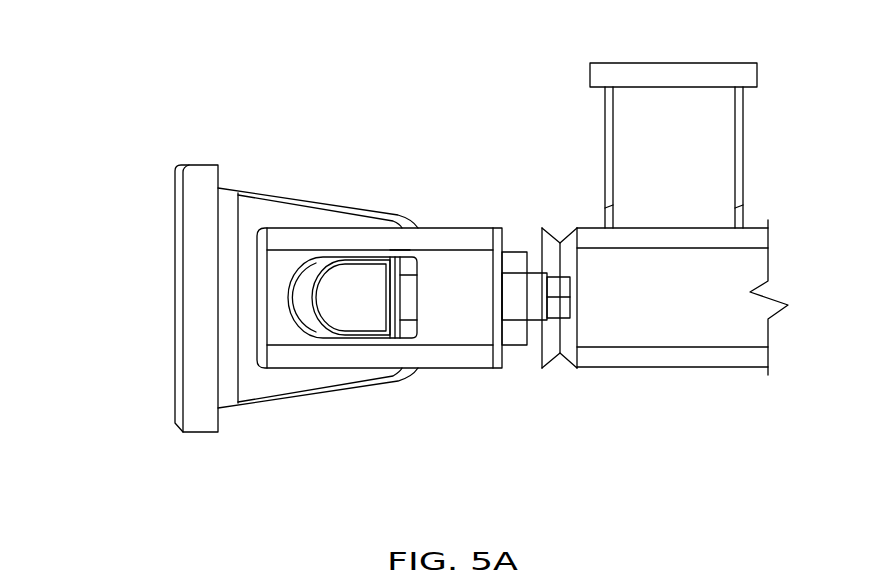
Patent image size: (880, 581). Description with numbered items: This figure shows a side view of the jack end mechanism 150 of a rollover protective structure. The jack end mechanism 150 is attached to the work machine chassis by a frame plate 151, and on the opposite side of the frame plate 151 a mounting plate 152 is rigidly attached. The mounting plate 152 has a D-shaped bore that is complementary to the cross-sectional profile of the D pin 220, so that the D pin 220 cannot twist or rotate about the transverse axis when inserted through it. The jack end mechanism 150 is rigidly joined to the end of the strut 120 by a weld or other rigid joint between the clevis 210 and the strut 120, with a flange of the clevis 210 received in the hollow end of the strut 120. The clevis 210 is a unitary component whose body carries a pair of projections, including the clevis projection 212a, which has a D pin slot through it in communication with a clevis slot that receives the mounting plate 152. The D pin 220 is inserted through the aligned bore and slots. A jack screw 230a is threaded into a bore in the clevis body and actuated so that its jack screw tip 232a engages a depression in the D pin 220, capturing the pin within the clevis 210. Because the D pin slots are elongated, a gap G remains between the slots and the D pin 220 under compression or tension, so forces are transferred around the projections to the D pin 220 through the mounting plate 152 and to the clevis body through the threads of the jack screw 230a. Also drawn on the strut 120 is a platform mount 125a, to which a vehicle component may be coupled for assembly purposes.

The jack end mechanism 150 is at (148, 53).
The frame plate 151 is at (202, 163).
The mounting plate 152 is at (293, 210).
The clevis 210 is at (460, 228).
The clevis projection 212a is at (400, 250).
The D pin 220 is at (365, 318).
The gap G is at (310, 318).
The jack screw tip 232a is at (520, 228).
The jack screw 230a is at (562, 310).
The strut 120 is at (673, 368).
The platform mount 125a is at (677, 63).